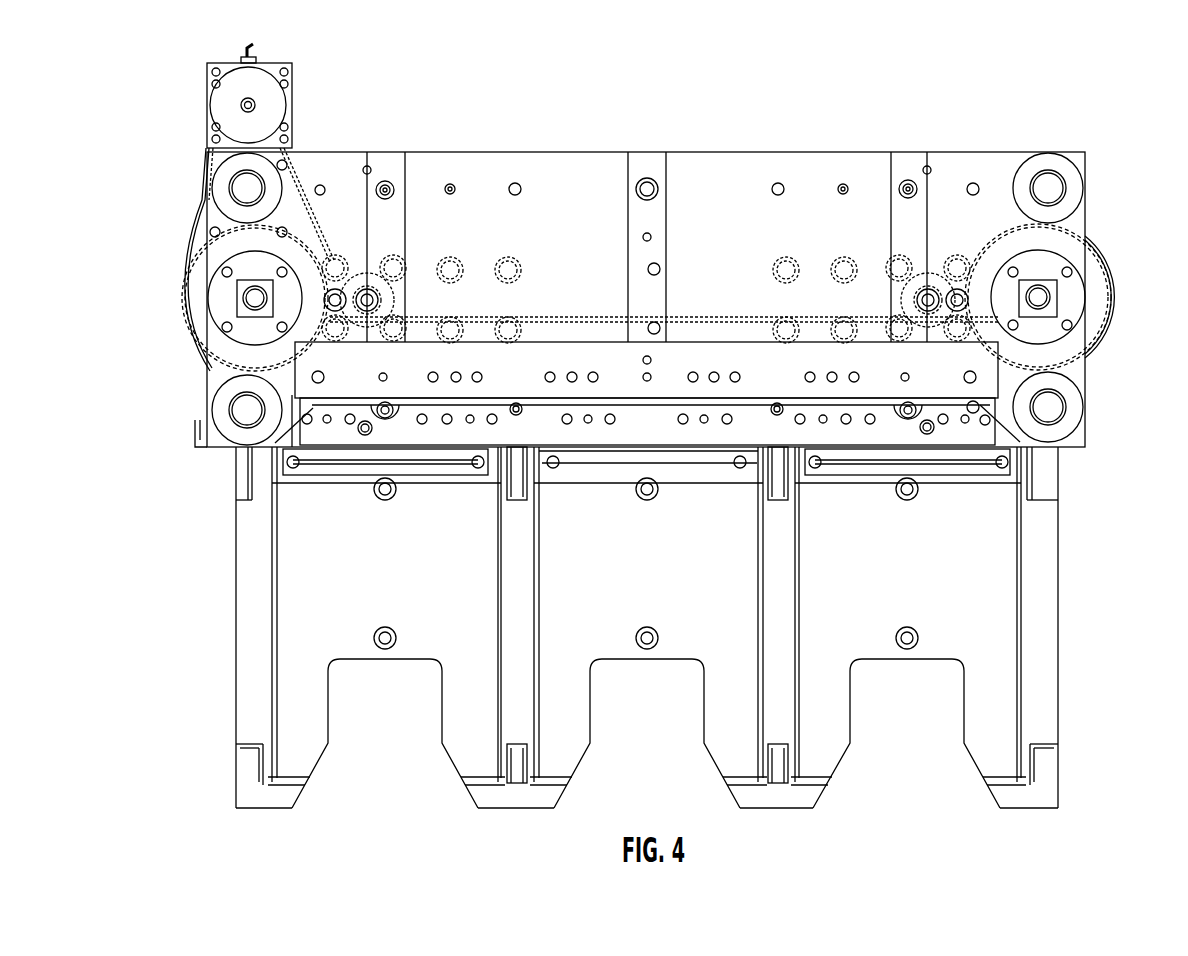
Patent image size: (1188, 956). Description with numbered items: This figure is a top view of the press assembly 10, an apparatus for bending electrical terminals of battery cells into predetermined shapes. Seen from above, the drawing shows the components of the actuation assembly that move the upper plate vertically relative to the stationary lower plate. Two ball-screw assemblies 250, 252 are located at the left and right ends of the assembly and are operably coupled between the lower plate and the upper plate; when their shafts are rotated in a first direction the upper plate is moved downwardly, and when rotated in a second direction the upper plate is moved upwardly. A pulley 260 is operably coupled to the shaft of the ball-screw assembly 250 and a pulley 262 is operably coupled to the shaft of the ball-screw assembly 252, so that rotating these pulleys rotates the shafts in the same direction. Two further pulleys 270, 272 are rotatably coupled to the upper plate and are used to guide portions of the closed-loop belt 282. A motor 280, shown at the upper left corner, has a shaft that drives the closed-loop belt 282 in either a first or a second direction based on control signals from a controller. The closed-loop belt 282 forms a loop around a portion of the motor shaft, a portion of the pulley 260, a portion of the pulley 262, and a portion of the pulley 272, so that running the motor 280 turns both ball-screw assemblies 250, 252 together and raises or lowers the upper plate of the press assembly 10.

The press assembly 10 is at (803, 116).
The ball-screw assembly 250 is at (225, 300).
The ball-screw assembly 252 is at (1073, 282).
The pulley 260 is at (195, 277).
The pulley 262 is at (1100, 290).
The pulley 270 is at (368, 295).
The pulley 272 is at (930, 285).
The motor 280 is at (274, 103).
The closed-loop belt 282 is at (1113, 312).